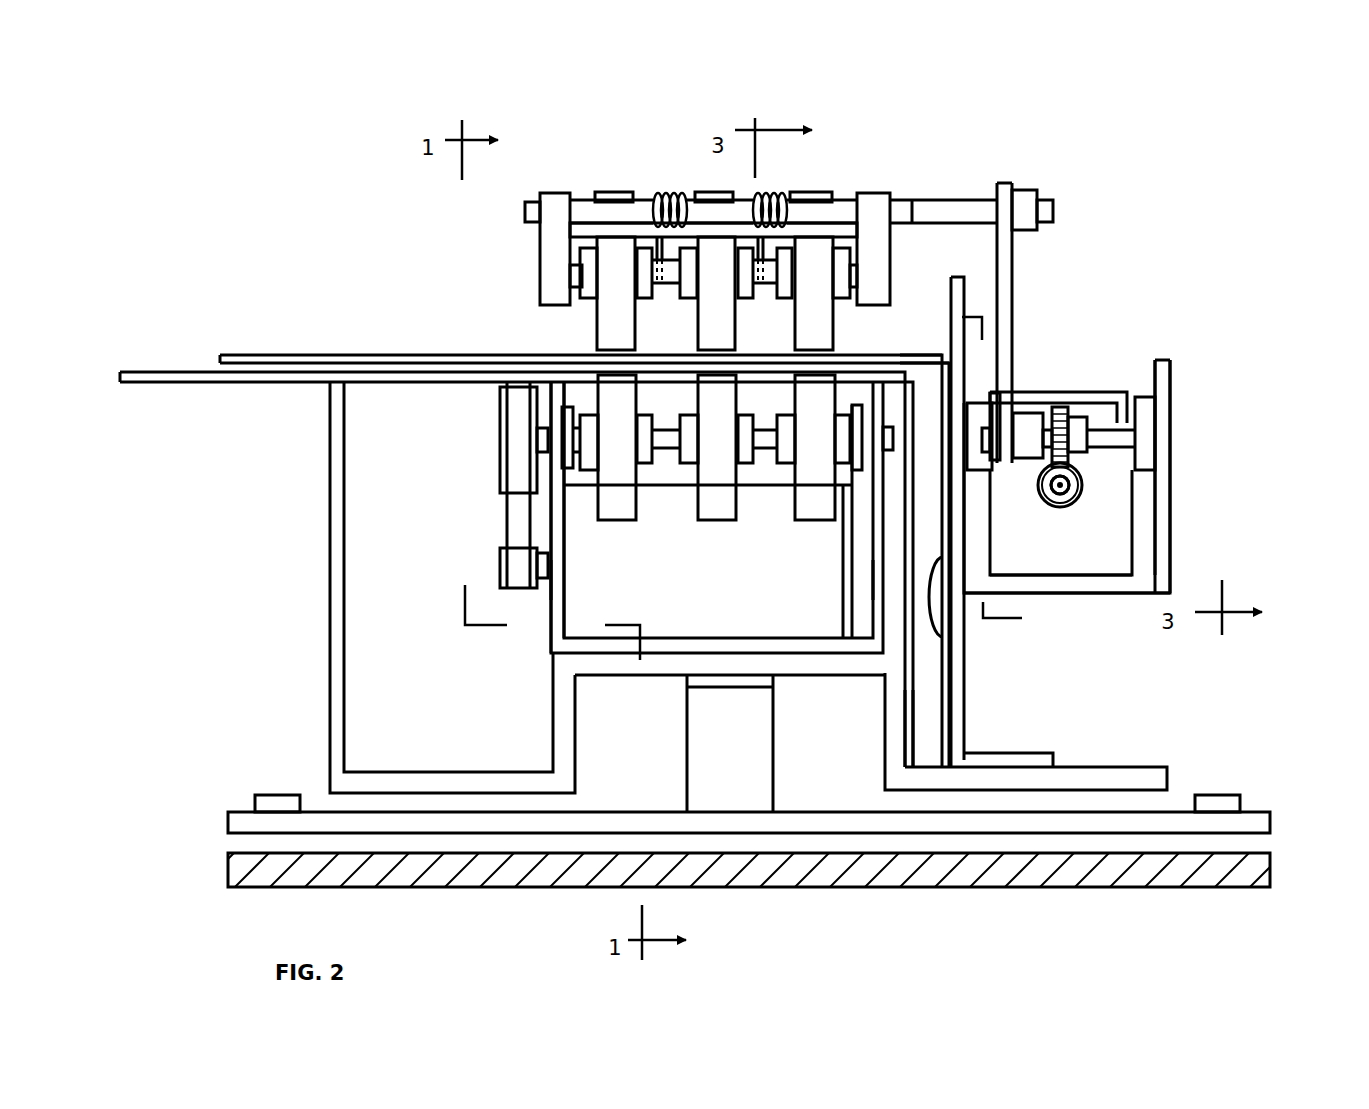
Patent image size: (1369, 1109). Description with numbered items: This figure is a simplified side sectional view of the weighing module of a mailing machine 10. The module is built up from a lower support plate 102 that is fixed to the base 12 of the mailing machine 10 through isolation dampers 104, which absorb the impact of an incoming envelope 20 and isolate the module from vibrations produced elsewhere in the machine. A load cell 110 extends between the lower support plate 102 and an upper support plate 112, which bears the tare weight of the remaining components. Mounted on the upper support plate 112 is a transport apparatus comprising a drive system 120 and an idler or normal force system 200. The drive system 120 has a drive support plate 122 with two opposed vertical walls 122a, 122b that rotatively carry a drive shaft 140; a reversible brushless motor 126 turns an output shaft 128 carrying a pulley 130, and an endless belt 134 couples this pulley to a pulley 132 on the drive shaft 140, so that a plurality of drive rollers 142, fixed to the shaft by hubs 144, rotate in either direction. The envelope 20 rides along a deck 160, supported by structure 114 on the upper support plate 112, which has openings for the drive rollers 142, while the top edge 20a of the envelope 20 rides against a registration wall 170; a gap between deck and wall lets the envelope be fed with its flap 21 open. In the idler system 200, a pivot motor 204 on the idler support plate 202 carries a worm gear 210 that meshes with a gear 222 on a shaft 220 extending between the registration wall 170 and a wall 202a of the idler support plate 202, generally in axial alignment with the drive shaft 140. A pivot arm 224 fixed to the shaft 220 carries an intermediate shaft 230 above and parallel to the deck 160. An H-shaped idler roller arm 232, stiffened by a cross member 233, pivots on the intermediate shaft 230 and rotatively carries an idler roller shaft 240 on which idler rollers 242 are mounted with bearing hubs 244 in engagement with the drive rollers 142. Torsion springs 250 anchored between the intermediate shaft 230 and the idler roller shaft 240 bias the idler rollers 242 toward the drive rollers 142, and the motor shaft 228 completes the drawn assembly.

The mailing machine 10 is at (1122, 181).
The base 12 is at (1272, 855).
The envelope 20 is at (290, 355).
The top edge 20a is at (940, 352).
The envelope flap 21 is at (950, 630).
The lower support plate 102 is at (1270, 815).
The isolation dampers 104 is at (1225, 795).
The load cell 110 is at (780, 737).
The upper support plate 112 is at (1113, 763).
The suitable structure 114 is at (915, 690).
The drive system 120 is at (464, 492).
The drive support plate 122 is at (544, 663).
The vertical wall 122a is at (567, 573).
The vertical wall 122b is at (870, 587).
The brushless motor 126 is at (788, 569).
The output shaft 128 is at (545, 583).
The pulley 130 is at (503, 560).
The pulley 132 is at (502, 427).
The endless belt 134 is at (503, 523).
The drive shaft 140 is at (665, 430).
The drive rollers 142 is at (633, 510).
The hubs 144 is at (585, 470).
The deck 160 is at (160, 372).
The registration wall 170 is at (948, 297).
The idler or normal force system 200 is at (1220, 395).
The idler support plate 202 is at (1170, 513).
The wall 202a is at (1172, 367).
The pivot motor 204 is at (1137, 550).
The worm gear 210 is at (1083, 493).
The shaft 220 is at (1107, 427).
The gear 222 is at (1065, 392).
The pivot arm 224 is at (1013, 260).
The motor shaft 228 is at (1050, 487).
The intermediate shaft 230 is at (955, 197).
The idler roller arm 232 is at (540, 262).
The cross member 233 is at (585, 228).
The idler roller shaft 240 is at (542, 257).
The idler rollers 242 is at (615, 188).
The bearing hubs 244 is at (583, 272).
The torsion springs 250 is at (657, 190).